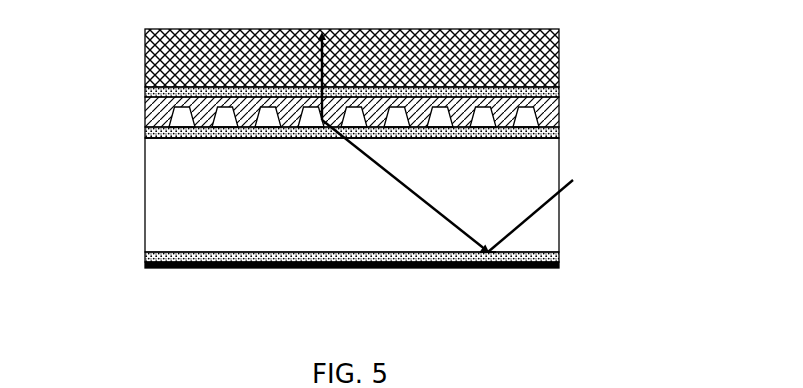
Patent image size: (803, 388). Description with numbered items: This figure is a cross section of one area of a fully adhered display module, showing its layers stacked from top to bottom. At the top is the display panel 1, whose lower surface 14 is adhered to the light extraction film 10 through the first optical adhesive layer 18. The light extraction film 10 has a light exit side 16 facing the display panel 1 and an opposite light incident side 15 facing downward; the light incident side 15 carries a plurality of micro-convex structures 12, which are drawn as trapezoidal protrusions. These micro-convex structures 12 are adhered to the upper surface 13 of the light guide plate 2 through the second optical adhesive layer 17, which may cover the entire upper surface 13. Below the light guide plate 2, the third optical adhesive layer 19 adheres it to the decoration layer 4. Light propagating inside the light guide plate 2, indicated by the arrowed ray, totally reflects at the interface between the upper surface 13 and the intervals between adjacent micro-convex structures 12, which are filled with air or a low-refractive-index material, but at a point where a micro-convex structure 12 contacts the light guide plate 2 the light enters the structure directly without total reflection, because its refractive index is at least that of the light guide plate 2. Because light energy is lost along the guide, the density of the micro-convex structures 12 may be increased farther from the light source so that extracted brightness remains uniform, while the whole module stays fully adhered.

The display panel 1 is at (558, 55).
The light exit side 16 is at (150, 73).
The first optical adhesive layer 18 is at (558, 88).
The light extraction film 10 is at (148, 100).
The light incident side 15 is at (148, 120).
The micro-convex structures 12 is at (523, 120).
The second optical adhesive layer 17 is at (550, 133).
The upper surface 13 is at (497, 137).
The light guide plate 2 is at (155, 223).
The third optical adhesive layer 19 is at (558, 253).
The decoration layer 4 is at (342, 268).
The lower surface 14 is at (490, 266).